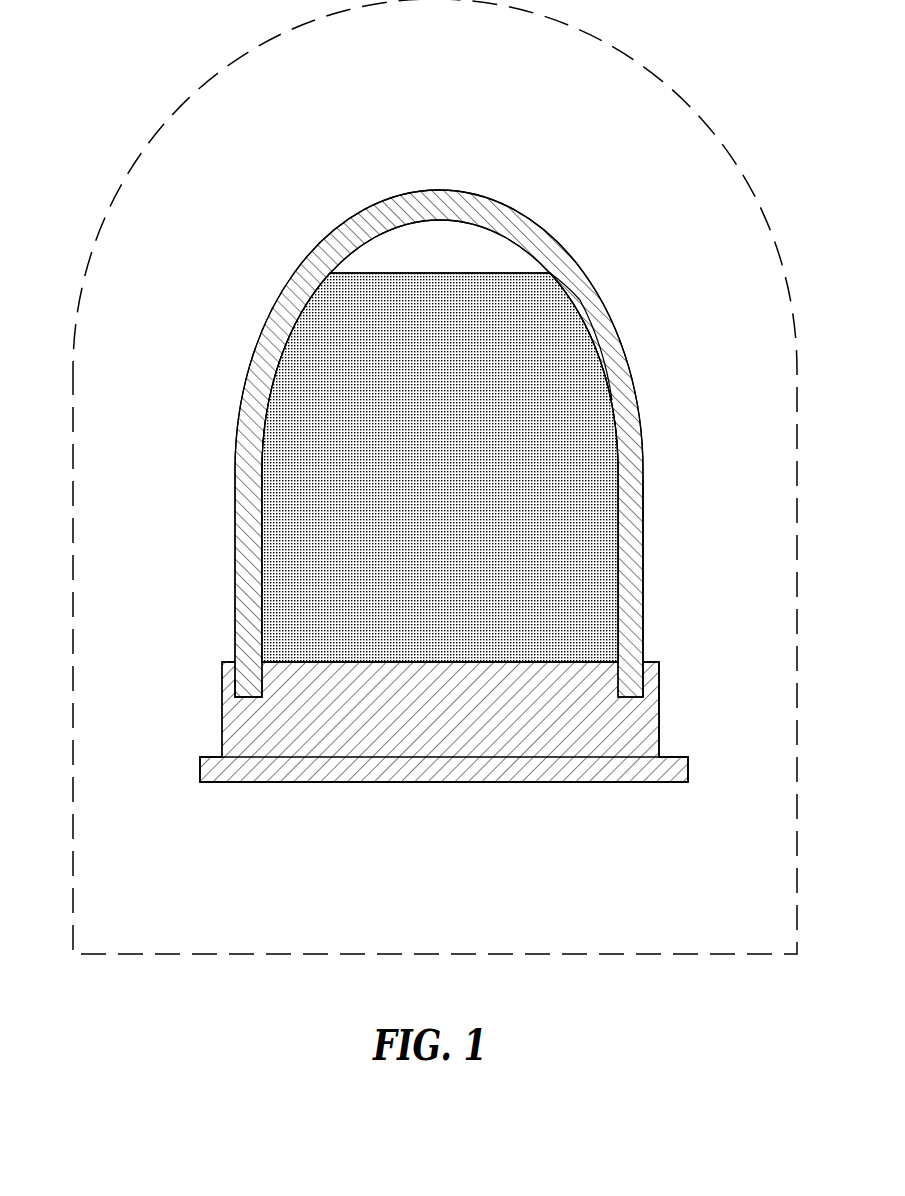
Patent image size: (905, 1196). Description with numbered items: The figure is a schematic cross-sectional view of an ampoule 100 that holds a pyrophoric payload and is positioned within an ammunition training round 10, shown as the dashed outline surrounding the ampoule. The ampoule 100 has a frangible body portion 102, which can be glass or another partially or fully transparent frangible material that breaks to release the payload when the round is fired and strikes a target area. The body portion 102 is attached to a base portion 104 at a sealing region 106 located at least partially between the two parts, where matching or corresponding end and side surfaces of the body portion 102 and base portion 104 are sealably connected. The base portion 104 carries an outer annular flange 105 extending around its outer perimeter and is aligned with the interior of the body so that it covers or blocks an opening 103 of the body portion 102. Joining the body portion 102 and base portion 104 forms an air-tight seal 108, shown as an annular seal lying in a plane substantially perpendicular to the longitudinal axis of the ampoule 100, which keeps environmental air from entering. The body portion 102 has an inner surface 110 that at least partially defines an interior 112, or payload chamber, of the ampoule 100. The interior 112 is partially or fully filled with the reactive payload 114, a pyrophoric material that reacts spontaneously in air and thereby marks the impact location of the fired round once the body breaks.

The ammunition training round 10 is at (206, 78).
The ampoule 100 is at (451, 511).
The frangible body portion 102 is at (644, 468).
The opening 103 is at (298, 702).
The base portion 104 is at (659, 712).
The outer annular flange 105 is at (688, 770).
The sealing region 106 is at (655, 627).
The air-tight seal 108 is at (246, 711).
The inner surface 110 is at (576, 313).
The interior 112 is at (576, 340).
The reactive payload 114 is at (457, 460).